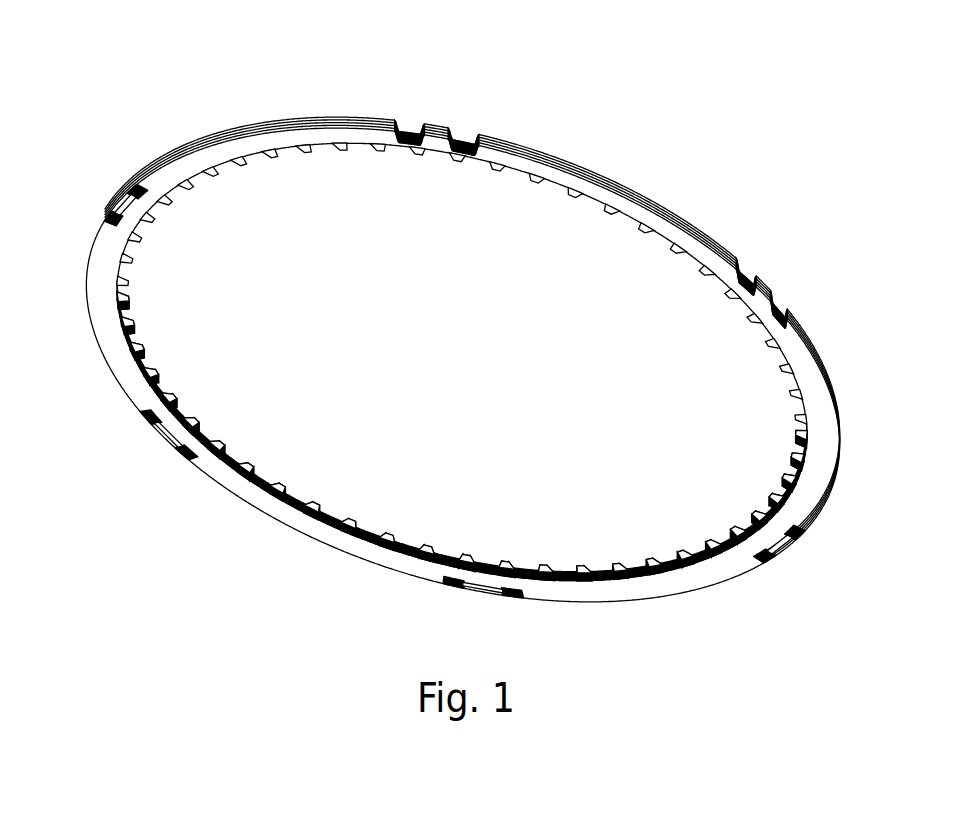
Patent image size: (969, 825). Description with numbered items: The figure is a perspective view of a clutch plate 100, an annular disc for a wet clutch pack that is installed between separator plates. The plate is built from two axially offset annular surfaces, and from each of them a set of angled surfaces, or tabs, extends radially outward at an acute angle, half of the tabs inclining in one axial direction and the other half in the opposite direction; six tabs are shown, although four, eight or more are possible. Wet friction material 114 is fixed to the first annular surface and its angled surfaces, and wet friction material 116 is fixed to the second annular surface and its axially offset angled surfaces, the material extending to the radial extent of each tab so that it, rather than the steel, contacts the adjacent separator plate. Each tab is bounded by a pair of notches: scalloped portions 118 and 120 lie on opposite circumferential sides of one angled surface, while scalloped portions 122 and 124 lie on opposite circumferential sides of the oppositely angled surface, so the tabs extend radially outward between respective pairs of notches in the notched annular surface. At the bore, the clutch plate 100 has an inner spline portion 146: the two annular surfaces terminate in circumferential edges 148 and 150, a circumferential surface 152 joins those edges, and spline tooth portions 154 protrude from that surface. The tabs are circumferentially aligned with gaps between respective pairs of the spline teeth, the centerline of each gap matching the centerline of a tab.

The clutch plate 100 is at (552, 112).
The wet friction material 114 is at (328, 140).
The wet friction material 116 is at (361, 118).
The scalloped portion 118 is at (113, 202).
The scalloped portion 120 is at (142, 182).
The scalloped portion 122 is at (415, 112).
The scalloped portion 124 is at (465, 134).
The inner spline portion 146 is at (384, 525).
The circumferential edge 148 is at (277, 484).
The circumferential edge 150 is at (320, 513).
The circumferential surface 152 is at (232, 459).
The spline tooth portions 154 is at (178, 394).